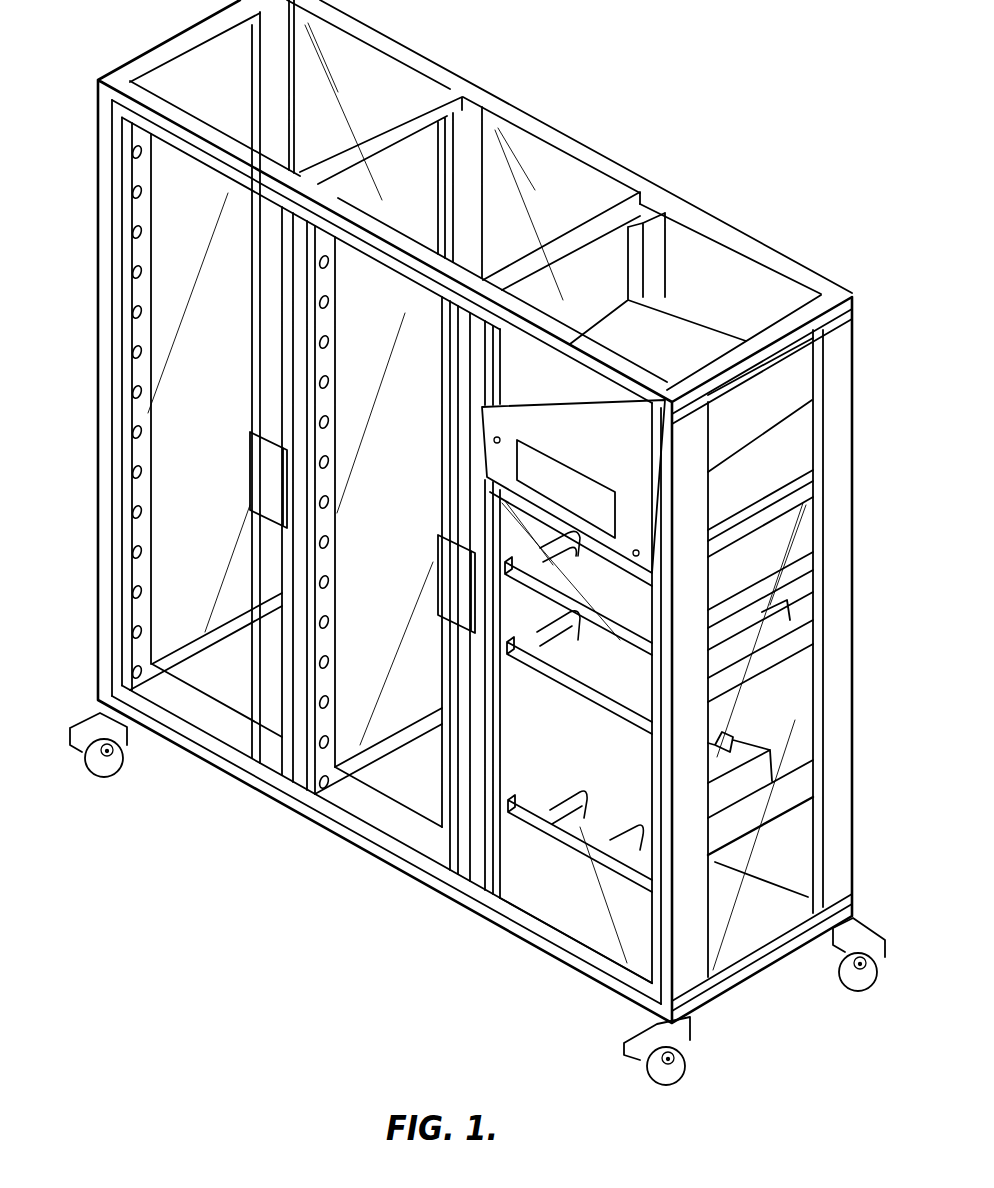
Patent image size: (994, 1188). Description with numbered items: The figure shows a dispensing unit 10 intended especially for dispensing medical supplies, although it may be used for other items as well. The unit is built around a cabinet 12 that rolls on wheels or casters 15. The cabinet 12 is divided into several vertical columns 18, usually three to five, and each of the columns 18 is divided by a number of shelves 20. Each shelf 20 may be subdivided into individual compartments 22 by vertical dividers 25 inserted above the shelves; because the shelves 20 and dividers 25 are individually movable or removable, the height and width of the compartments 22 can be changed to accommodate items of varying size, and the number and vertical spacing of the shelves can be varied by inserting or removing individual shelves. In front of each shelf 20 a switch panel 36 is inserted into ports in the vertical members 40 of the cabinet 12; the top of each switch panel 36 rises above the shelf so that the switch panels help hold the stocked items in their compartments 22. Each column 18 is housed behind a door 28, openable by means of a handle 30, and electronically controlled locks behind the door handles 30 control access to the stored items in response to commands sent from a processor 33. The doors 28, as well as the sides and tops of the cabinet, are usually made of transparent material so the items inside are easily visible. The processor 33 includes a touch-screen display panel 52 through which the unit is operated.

The dispensing unit 10 is at (390, 890).
The cabinet 12 is at (97, 295).
The casters 15 is at (95, 781).
The vertical columns 18 is at (207, 715).
The shelves 20 is at (795, 557).
The compartments 22 is at (517, 877).
The vertical dividers 25 is at (550, 890).
The door 28 is at (250, 742).
The handle 30 is at (253, 507).
The processor 33 is at (800, 446).
The switch panel 36 is at (633, 777).
The vertical members 40 is at (141, 297).
The touch-screen display panel 52 is at (572, 465).